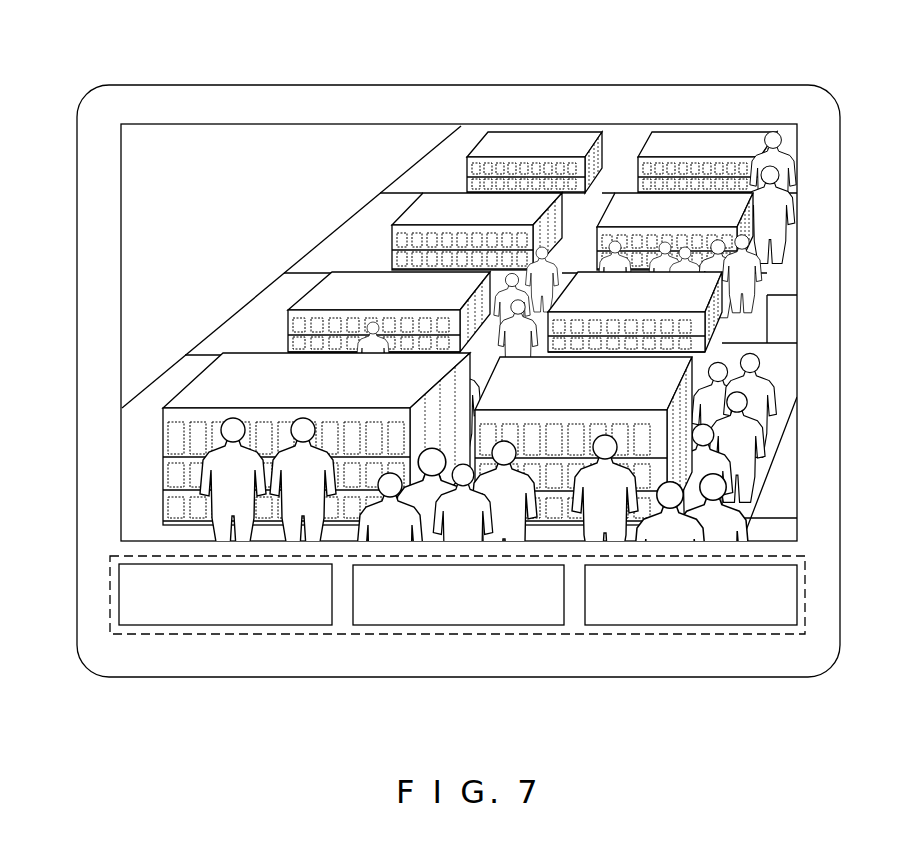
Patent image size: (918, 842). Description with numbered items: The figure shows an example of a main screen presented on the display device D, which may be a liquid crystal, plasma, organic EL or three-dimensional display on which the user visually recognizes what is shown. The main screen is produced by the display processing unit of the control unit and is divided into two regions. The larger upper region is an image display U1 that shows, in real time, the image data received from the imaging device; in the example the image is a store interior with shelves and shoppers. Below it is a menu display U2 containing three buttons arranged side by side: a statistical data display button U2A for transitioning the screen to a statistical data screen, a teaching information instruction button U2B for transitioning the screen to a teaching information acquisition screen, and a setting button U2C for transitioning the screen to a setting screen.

The display device D is at (284, 85).
The image display U1 is at (121, 326).
The menu display U2 is at (417, 640).
The statistical data display button U2A is at (298, 626).
The teaching information instruction button U2B is at (523, 626).
The setting button U2C is at (755, 626).